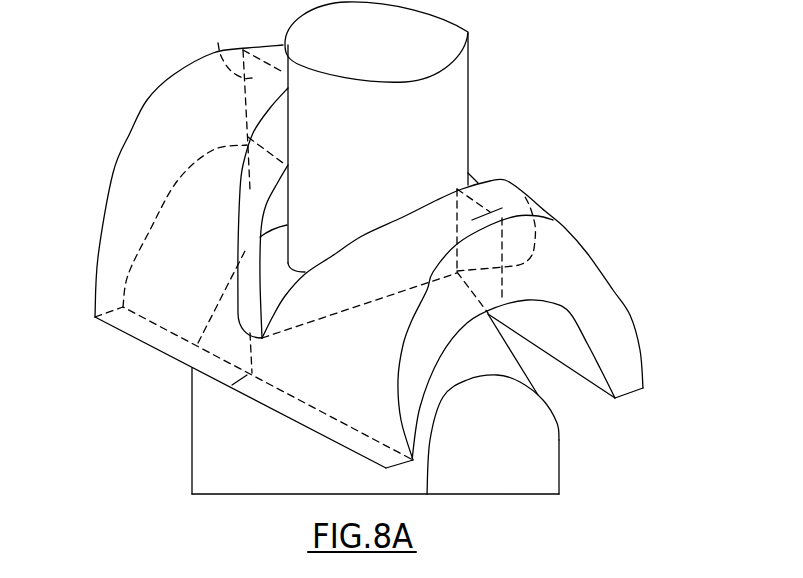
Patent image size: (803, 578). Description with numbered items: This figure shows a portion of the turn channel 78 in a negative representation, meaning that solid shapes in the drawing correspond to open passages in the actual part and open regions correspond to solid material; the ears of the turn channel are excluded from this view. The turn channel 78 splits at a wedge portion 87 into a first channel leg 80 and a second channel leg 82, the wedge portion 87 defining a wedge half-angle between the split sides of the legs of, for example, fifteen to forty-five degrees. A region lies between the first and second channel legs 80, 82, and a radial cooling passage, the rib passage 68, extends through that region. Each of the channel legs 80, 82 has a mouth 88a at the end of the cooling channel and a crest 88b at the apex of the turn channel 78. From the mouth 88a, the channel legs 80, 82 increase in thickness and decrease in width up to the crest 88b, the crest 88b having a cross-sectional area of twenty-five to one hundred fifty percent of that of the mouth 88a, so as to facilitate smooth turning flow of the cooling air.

The rib passage 68 is at (515, 453).
The turn channel 78 is at (592, 212).
The first channel leg 80 is at (562, 295).
The second channel leg 82 is at (203, 95).
The wedge portion 87 is at (270, 318).
The mouth 88a is at (277, 402).
The crest 88b is at (218, 43).